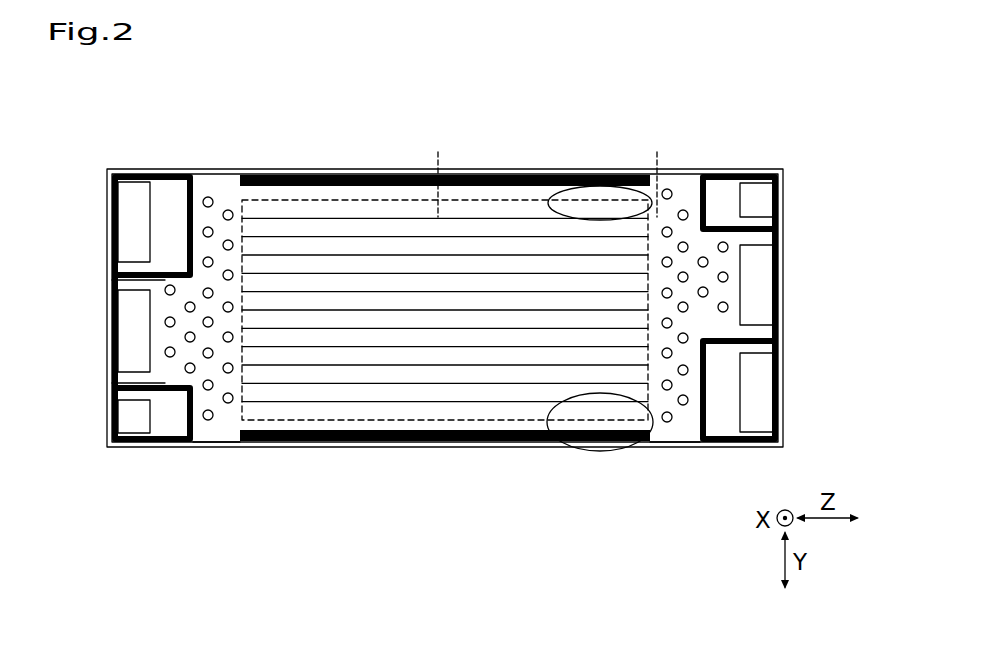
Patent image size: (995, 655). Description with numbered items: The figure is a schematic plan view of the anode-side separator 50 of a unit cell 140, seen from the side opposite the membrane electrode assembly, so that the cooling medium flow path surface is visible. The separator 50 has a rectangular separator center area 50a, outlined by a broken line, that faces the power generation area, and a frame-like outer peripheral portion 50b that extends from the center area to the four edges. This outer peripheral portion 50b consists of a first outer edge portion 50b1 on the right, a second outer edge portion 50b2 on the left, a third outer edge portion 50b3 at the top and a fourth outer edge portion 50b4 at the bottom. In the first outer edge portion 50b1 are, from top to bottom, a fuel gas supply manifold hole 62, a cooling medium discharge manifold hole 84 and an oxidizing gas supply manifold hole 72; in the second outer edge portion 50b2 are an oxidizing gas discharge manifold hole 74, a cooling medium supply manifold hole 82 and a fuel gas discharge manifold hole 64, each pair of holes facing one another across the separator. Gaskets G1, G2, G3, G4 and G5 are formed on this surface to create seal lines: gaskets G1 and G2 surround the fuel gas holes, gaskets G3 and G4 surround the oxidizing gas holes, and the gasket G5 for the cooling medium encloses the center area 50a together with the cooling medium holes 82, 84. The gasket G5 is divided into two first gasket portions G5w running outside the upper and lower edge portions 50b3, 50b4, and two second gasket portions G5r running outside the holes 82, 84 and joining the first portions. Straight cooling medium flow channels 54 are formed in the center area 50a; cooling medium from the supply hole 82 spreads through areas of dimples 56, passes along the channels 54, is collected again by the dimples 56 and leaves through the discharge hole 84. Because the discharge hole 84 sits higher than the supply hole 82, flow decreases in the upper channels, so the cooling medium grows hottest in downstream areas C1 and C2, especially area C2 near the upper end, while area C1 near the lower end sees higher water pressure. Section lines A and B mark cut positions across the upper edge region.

The unit cell 140 is at (806, 110).
The anode-side separator 50 is at (784, 170).
The separator center area 50a is at (458, 197).
The outer peripheral portion 50b is at (445, 336).
The first outer edge portion 50b1 is at (711, 177).
The second outer edge portion 50b2 is at (179, 170).
The third outer edge portion 50b3 is at (299, 174).
The fourth outer edge portion 50b4 is at (396, 443).
The cooling medium flow channels 54 is at (393, 248).
The dimples 56 is at (226, 404).
The fuel gas supply manifold hole 62 is at (765, 205).
The fuel gas discharge manifold hole 64 is at (128, 413).
The oxidizing gas supply manifold hole 72 is at (767, 383).
The oxidizing gas discharge manifold hole 74 is at (128, 213).
The cooling medium supply manifold hole 82 is at (745, 288).
The cooling medium discharge manifold hole 84 is at (765, 300).
The gasket G1 is at (784, 221).
The gasket G2 is at (108, 437).
The gasket G3 is at (784, 411).
The gasket G4 is at (108, 251).
The gasket for the cooling medium G5 is at (446, 386).
The second gasket portions G5r is at (380, 550).
The first gasket portions G5w is at (445, 367).
The section line A- A is at (430, 155).
The section line B- B is at (649, 155).
The area C1 is at (577, 450).
The area C2 is at (600, 172).